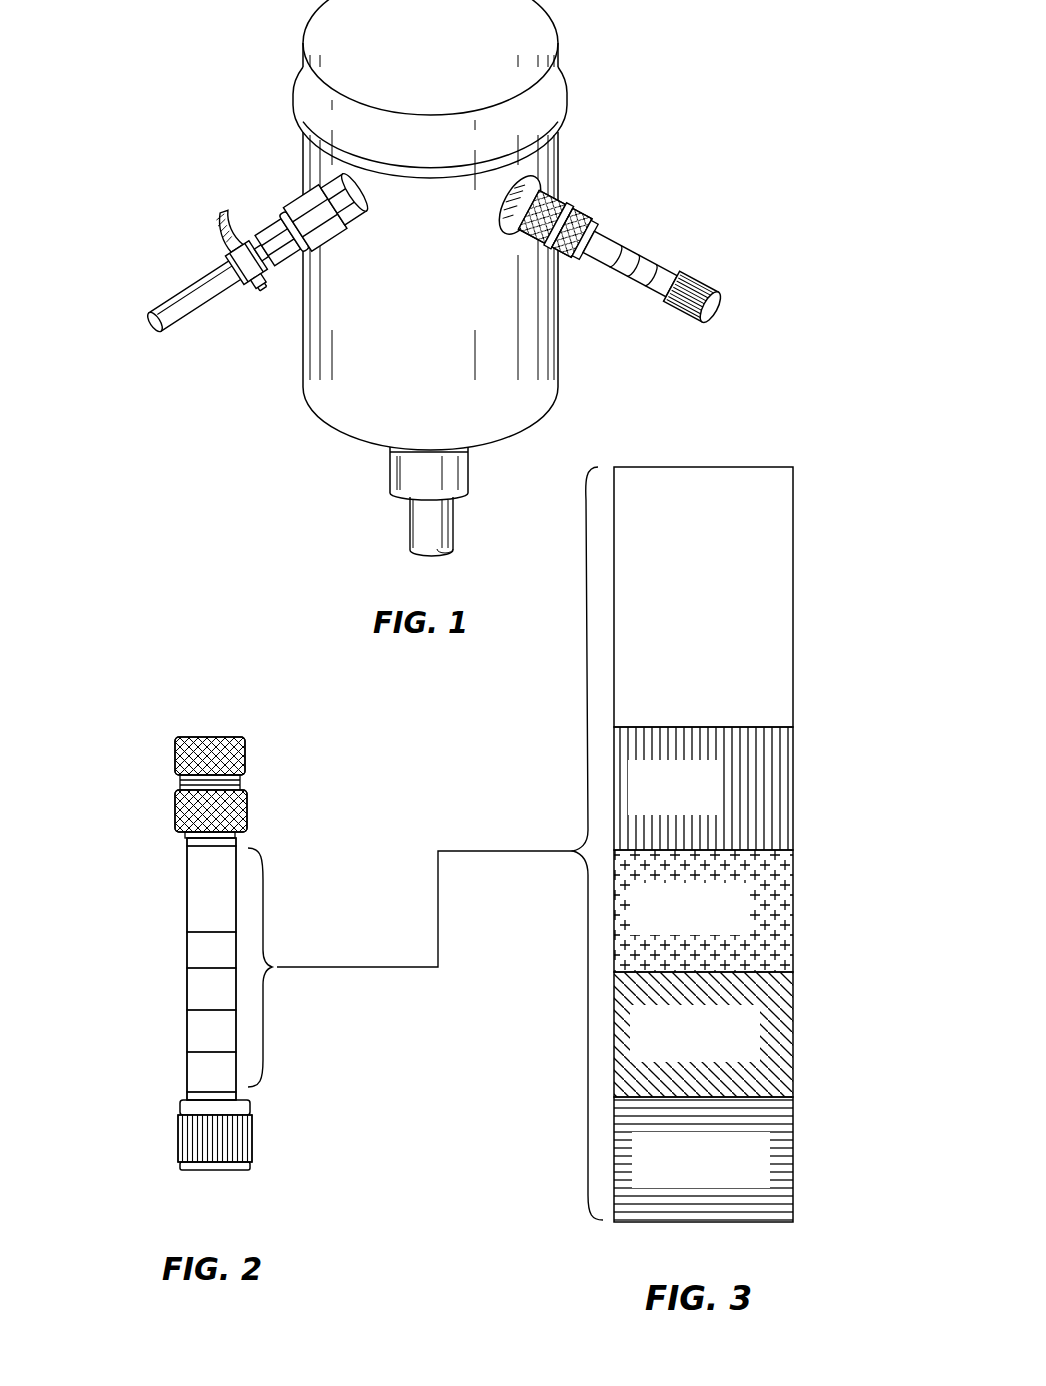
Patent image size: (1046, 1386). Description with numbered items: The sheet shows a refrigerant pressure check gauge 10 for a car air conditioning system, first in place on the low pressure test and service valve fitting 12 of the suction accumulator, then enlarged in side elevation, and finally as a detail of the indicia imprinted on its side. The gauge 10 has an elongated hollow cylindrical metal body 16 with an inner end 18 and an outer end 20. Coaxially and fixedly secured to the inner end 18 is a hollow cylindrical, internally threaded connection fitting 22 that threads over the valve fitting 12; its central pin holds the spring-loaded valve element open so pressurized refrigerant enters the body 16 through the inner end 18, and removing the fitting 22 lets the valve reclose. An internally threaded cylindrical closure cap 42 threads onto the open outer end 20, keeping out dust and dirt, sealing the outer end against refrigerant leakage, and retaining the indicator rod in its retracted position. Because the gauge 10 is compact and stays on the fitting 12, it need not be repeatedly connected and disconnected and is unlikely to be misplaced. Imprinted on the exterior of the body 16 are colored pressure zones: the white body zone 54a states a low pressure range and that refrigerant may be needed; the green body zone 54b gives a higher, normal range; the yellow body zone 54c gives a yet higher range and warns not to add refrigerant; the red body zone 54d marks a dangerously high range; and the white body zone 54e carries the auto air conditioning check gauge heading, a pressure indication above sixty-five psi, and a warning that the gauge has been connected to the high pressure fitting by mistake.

In FIG. 1, the refrigerant pressure check gauge 10 is at (620, 239).
In FIG. 2, the refrigerant pressure check gauge 10 is at (139, 953).
In FIG. 1, the low pressure test and service valve fitting 12 is at (540, 180).
In FIG. 1, the hollow cylindrical metal body 16 is at (618, 287).
In FIG. 2, the hollow cylindrical metal body 16 is at (180, 965).
In FIG. 2, the inner end 18 is at (187, 843).
In FIG. 2, the outer end 20 is at (192, 1093).
In FIG. 1, the connection fitting 22 is at (580, 216).
In FIG. 2, the connection fitting 22 is at (177, 764).
In FIG. 1, the closure cap 42 is at (708, 288).
In FIG. 2, the closure cap 42 is at (177, 1138).
In FIG. 2, the white body zone 54a is at (202, 1073).
In FIG. 3, the white body zone 54a is at (780, 1200).
In FIG. 2, the green body zone 54b is at (200, 1028).
In FIG. 3, the green body zone 54b is at (777, 1078).
In FIG. 2, the yellow body zone 54c is at (198, 988).
In FIG. 3, the yellow body zone 54c is at (795, 938).
In FIG. 2, the red body zone 54d is at (197, 948).
In FIG. 3, the red body zone 54d is at (777, 803).
In FIG. 2, the white body zone 54e is at (197, 882).
In FIG. 3, the white body zone 54e is at (777, 662).